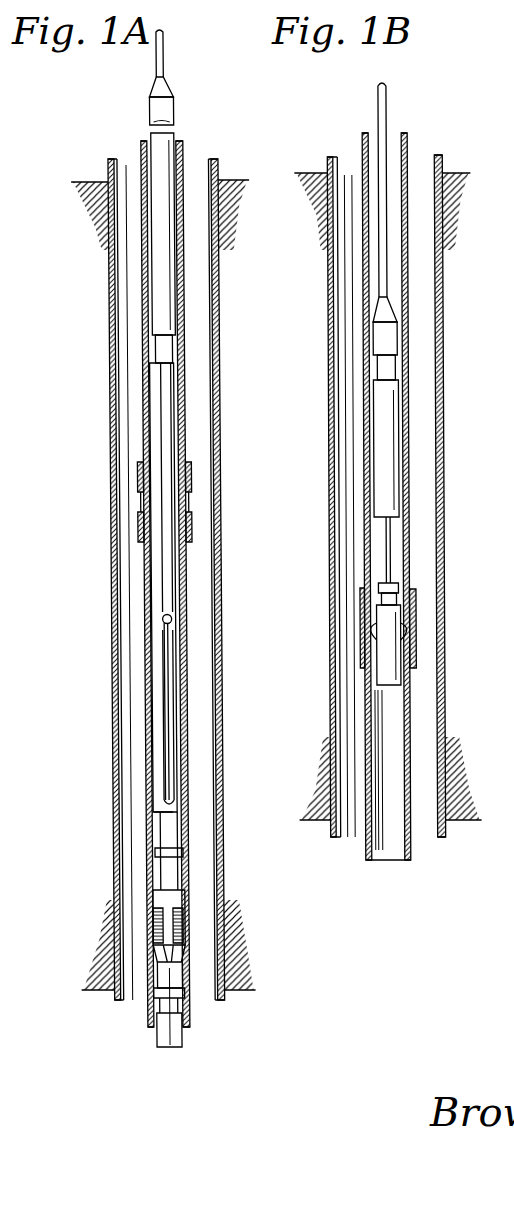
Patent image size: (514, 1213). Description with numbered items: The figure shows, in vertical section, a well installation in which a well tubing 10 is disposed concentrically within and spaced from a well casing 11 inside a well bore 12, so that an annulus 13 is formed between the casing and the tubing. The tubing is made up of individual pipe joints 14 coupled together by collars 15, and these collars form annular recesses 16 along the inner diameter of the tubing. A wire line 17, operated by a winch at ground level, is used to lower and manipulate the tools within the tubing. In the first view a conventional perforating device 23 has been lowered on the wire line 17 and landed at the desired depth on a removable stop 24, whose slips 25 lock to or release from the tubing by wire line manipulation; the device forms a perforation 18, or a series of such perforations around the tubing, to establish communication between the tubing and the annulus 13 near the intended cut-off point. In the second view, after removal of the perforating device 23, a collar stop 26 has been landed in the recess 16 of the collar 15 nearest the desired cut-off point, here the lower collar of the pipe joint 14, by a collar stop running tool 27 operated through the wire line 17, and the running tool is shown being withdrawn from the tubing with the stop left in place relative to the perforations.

In FIG. 1A, the well tubing 10 is at (190, 210).
In FIG. 1B, the well tubing 10 is at (412, 237).
In FIG. 1A, the well casing 11 is at (108, 612).
In FIG. 1B, the well casing 11 is at (446, 556).
In FIG. 1A, the well bore 12 is at (111, 672).
In FIG. 1B, the well bore 12 is at (443, 472).
In FIG. 1A, the annulus 13 is at (203, 780).
In FIG. 1B, the annulus 13 is at (421, 425).
In FIG. 1A, the pipe joint 14 is at (145, 265).
In FIG. 1B, the pipe joint 14 is at (409, 297).
In FIG. 1A, the collar 15 is at (193, 505).
In FIG. 1B, the collar 15 is at (416, 598).
In FIG. 1A, the annular recess 16 is at (147, 500).
In FIG. 1B, the annular recess 16 is at (414, 620).
In FIG. 1A, the wire line 17 is at (172, 62).
In FIG. 1B, the wire line 17 is at (390, 112).
In FIG. 1A, the perforation 18 is at (144, 410).
In FIG. 1B, the perforation 18 is at (410, 537).
In FIG. 1A, the perforating device 23 is at (162, 562).
In FIG. 1A, the removable stop 24 is at (176, 975).
In FIG. 1A, the slips 25 is at (149, 918).
In FIG. 1B, the collar stop 26 is at (399, 655).
In FIG. 1B, the collar stop running tool 27 is at (403, 394).